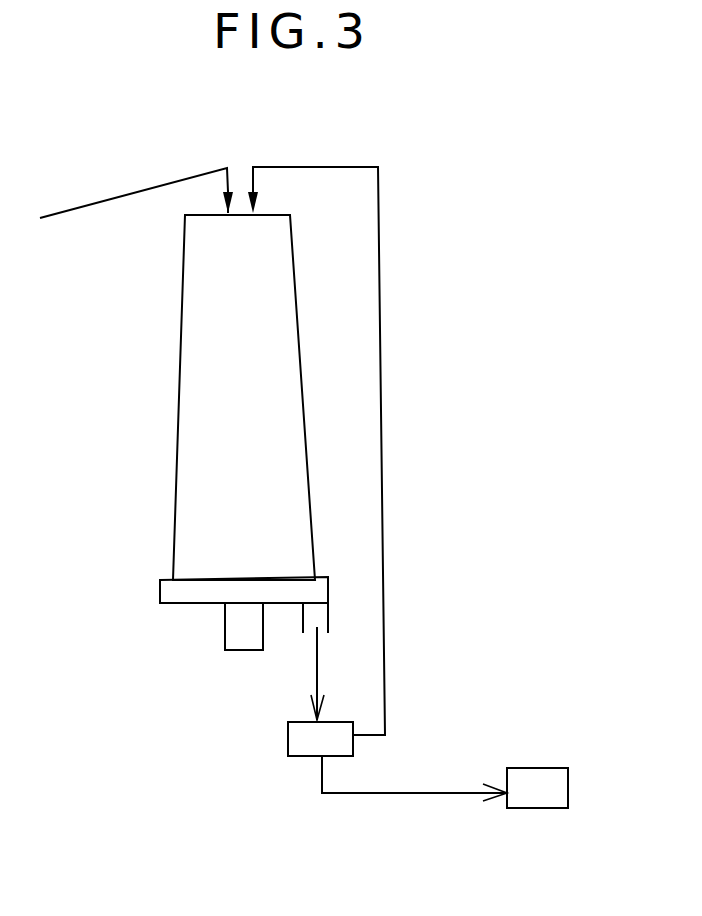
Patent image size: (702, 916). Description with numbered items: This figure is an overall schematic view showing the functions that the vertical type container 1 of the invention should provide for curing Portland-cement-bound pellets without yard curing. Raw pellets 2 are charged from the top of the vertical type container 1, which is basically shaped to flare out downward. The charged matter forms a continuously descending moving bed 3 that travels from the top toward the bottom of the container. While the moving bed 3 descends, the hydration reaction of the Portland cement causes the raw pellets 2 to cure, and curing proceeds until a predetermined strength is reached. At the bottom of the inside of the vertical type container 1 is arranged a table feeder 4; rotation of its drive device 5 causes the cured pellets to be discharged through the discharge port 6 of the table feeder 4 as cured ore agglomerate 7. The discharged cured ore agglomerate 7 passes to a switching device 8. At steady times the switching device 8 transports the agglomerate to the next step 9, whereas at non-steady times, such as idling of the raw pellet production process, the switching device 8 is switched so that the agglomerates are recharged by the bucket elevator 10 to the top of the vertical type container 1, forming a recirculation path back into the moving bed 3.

The vertical type container 1 is at (302, 397).
The raw pellets 2 is at (100, 201).
The moving bed 3 is at (212, 423).
The table feeder 4 is at (263, 586).
The drive device 5 is at (263, 630).
The discharge port 6 is at (328, 612).
The cured ore agglomerate 7 is at (317, 680).
The switching device 8 is at (288, 740).
The next step 9 is at (547, 797).
The bucket elevator 10 is at (382, 378).